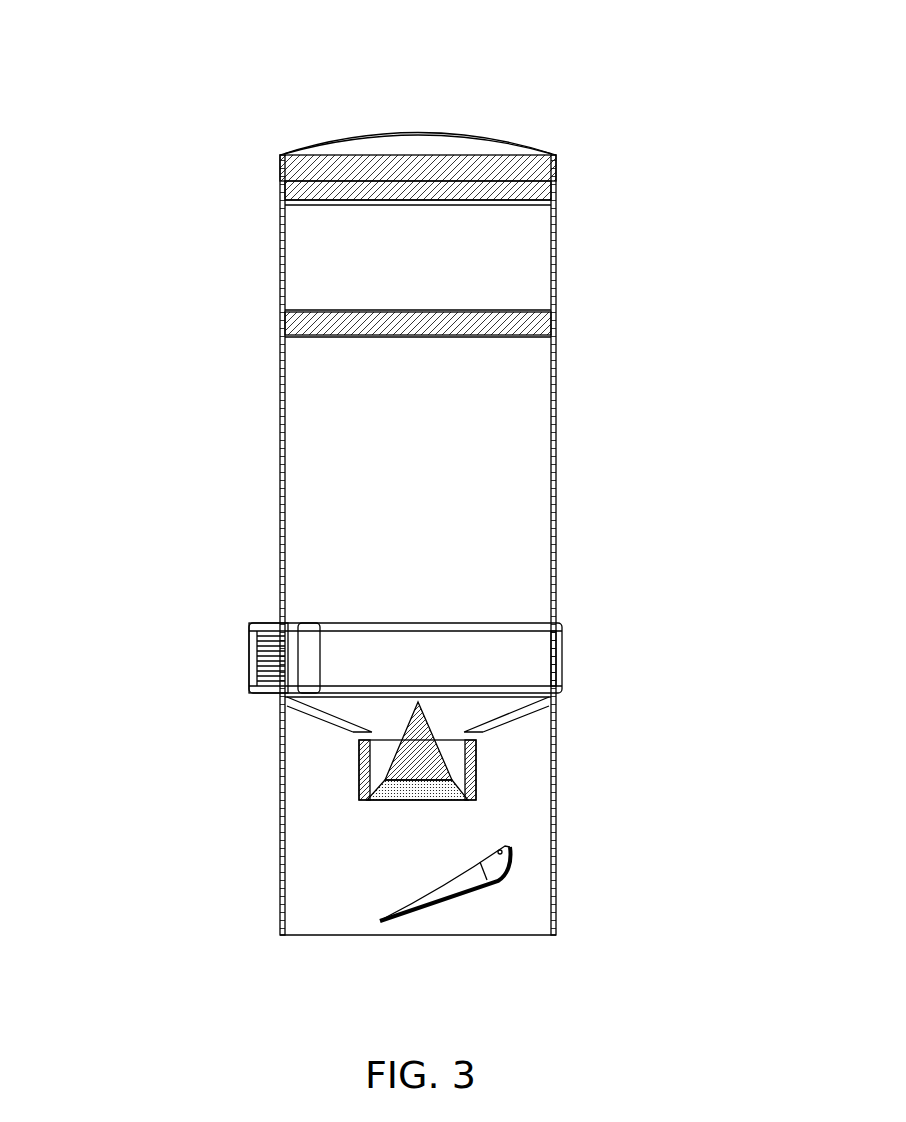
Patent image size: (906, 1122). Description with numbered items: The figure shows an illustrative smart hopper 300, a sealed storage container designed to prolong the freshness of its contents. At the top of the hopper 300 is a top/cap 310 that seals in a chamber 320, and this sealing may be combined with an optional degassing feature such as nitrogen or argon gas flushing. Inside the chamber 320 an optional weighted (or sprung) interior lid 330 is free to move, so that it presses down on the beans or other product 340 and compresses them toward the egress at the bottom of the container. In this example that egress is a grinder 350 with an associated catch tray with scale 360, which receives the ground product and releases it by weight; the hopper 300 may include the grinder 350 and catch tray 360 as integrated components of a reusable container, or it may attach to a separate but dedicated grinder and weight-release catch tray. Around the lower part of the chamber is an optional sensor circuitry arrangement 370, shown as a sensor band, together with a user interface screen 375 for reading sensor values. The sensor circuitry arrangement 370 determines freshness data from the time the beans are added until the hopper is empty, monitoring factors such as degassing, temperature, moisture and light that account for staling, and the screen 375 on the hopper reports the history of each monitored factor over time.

The smart hopper 300 is at (641, 72).
The top/cap 310 is at (527, 150).
The chamber 320 is at (313, 249).
The weighted interior lid 330 is at (532, 328).
The beans 340 is at (313, 449).
The grinder 350 is at (481, 770).
The catch tray with scale 360 is at (517, 851).
The sensor circuitry arrangement 370 is at (562, 650).
The user interface screen 375 is at (247, 650).